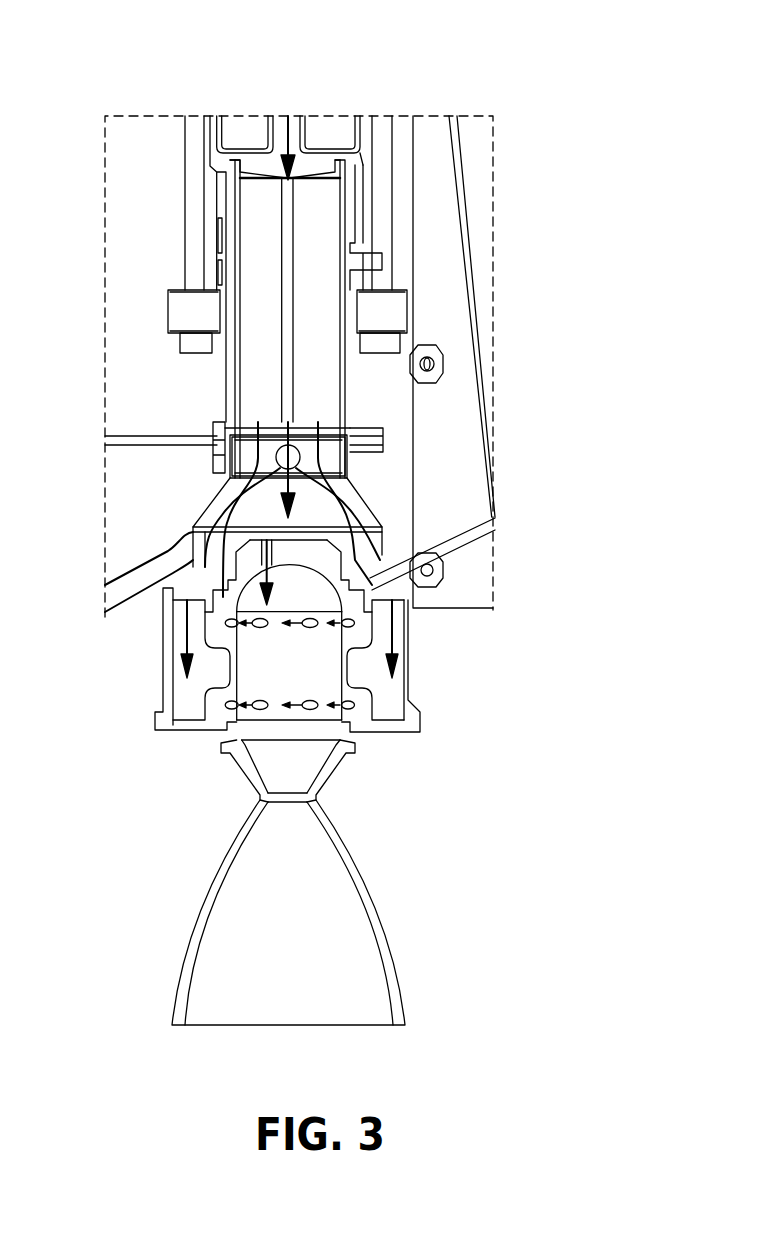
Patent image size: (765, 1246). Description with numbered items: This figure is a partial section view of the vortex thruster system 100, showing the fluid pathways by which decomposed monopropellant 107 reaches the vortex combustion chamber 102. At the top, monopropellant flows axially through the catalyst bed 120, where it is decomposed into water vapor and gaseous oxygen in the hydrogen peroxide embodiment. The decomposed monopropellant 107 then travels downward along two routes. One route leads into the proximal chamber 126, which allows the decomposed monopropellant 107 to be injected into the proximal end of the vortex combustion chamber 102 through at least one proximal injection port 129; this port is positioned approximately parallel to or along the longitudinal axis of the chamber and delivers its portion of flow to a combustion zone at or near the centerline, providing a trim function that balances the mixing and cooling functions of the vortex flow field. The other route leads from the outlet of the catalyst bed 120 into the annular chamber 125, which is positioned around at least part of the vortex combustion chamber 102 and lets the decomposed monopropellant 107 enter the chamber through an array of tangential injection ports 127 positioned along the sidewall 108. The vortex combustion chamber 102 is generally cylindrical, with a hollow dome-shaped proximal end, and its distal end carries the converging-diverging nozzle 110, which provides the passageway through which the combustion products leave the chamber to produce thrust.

The vortex thruster system 100 is at (173, 67).
The vortex combustion chamber 102 is at (310, 677).
The decomposed monopropellant 107 is at (325, 452).
The sidewall 108 is at (315, 657).
The converging-diverging nozzle 110 is at (335, 932).
The catalyst bed 120 is at (267, 362).
The annular chamber 125 is at (215, 660).
The proximal chamber 126 is at (262, 515).
The tangential injection ports 127 is at (257, 623).
The proximal injection port 129 is at (232, 578).